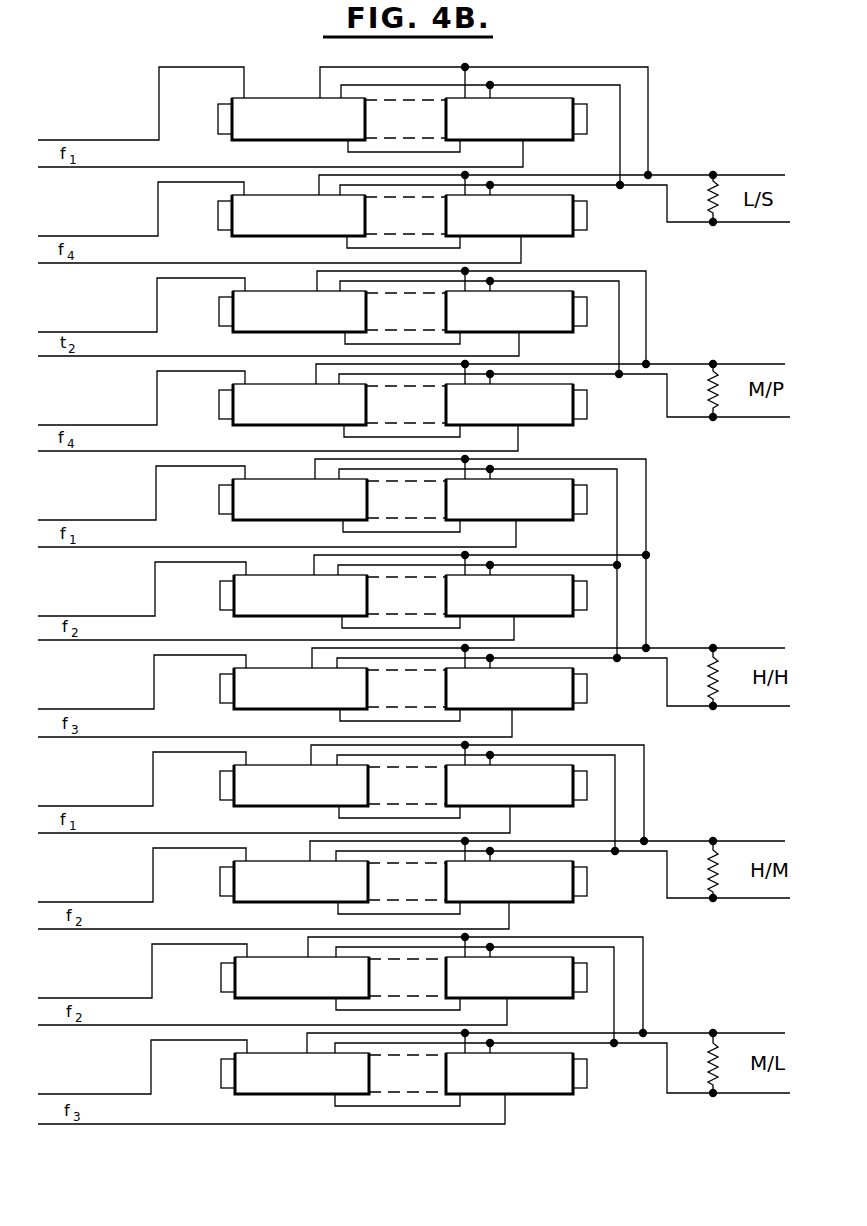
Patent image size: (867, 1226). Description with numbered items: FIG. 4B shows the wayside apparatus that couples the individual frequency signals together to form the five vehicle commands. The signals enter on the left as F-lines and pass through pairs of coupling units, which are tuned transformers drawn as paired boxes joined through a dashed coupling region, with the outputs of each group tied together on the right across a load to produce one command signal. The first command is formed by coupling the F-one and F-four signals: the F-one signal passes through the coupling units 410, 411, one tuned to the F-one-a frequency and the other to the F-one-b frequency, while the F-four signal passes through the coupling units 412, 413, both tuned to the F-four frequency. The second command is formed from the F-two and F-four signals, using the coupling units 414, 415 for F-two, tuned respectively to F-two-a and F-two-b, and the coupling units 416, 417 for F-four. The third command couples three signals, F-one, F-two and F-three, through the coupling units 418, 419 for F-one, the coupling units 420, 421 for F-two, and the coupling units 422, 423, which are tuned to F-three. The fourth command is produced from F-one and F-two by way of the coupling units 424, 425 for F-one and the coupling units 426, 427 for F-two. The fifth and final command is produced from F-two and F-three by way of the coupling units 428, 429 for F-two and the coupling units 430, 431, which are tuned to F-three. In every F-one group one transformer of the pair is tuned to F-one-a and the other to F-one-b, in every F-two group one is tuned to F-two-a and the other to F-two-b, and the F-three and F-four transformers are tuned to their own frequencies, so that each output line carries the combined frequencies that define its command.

The coupling unit 410 is at (291, 119).
The coupling unit 411 is at (516, 119).
The coupling unit 412 is at (291, 215).
The coupling unit 413 is at (516, 215).
The coupling unit 414 is at (292, 311).
The coupling unit 415 is at (516, 311).
The coupling unit 416 is at (292, 404).
The coupling unit 417 is at (516, 404).
The coupling unit 418 is at (293, 499).
The coupling unit 419 is at (516, 499).
The coupling unit 420 is at (293, 595).
The coupling unit 421 is at (516, 595).
The coupling unit 422 is at (293, 688).
The coupling unit 423 is at (516, 688).
The coupling unit 424 is at (294, 785).
The coupling unit 425 is at (516, 785).
The coupling unit 426 is at (294, 881).
The coupling unit 427 is at (516, 881).
The coupling unit 428 is at (295, 977).
The coupling unit 429 is at (516, 977).
The coupling unit 430 is at (295, 1073).
The coupling unit 431 is at (516, 1073).